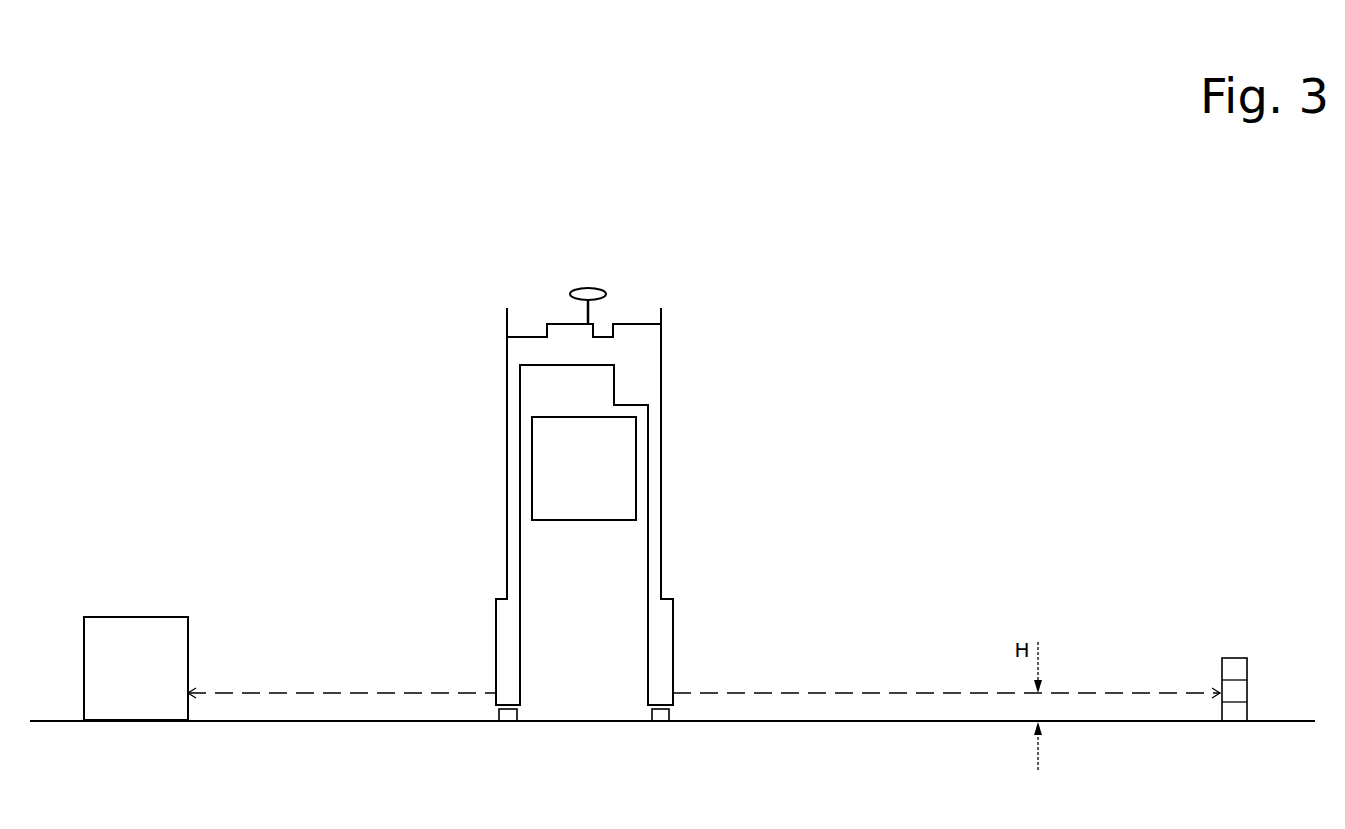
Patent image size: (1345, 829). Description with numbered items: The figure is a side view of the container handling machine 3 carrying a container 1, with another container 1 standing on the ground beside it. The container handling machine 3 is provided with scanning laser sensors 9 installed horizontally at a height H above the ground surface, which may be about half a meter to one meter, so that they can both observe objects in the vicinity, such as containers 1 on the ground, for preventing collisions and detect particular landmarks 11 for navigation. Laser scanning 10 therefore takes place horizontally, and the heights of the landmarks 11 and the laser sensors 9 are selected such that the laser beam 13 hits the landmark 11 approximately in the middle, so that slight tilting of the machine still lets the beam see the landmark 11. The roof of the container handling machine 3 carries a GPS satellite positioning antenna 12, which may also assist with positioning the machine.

The container 1 is at (360, 568).
The container handling machine 3 is at (507, 358).
The scanning laser sensor 9 is at (488, 687).
The laser scanning 10 is at (1106, 692).
The landmark 11 is at (1236, 657).
The GPS satellite positioning antenna 12 is at (602, 287).
The laser beam 13 is at (704, 635).